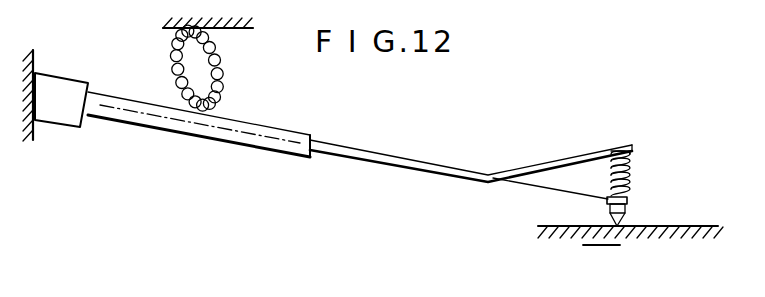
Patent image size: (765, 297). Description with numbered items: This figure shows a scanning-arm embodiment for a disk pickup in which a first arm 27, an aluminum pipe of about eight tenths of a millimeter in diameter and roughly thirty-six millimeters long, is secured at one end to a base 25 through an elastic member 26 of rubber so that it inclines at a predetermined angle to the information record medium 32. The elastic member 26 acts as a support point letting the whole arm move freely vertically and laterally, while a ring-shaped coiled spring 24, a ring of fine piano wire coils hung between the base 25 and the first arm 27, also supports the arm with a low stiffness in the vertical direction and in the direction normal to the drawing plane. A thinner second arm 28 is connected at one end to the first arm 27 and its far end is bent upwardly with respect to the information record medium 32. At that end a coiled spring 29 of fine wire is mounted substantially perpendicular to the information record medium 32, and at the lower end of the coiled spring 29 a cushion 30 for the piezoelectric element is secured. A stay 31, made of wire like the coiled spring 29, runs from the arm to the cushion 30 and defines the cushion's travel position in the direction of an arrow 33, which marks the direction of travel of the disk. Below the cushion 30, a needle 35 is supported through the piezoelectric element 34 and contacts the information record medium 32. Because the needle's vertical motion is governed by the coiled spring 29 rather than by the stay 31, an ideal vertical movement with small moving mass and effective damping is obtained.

The ring-shaped coiled spring 24 is at (218, 70).
The base 25 is at (35, 62).
The elastic member 26 is at (63, 127).
The first arm 27 is at (292, 107).
The second arm 28 is at (397, 161).
The coiled spring 29 is at (630, 164).
The cushion for the piezoelectric element 30 is at (630, 197).
The stay 31 is at (542, 192).
The information record medium 32 is at (701, 229).
The arrow 33 is at (597, 248).
The piezoelectric element 34 is at (607, 207).
The needle 35 is at (619, 227).